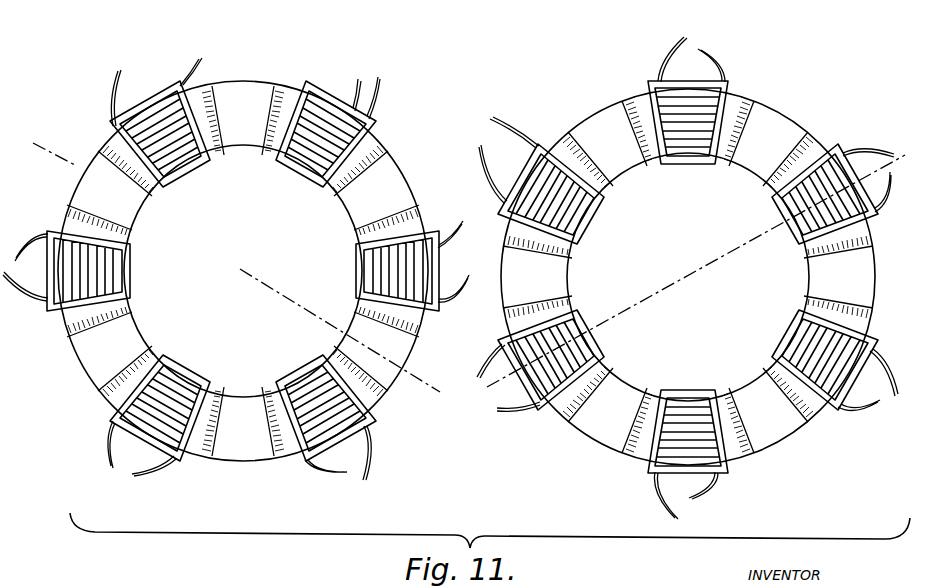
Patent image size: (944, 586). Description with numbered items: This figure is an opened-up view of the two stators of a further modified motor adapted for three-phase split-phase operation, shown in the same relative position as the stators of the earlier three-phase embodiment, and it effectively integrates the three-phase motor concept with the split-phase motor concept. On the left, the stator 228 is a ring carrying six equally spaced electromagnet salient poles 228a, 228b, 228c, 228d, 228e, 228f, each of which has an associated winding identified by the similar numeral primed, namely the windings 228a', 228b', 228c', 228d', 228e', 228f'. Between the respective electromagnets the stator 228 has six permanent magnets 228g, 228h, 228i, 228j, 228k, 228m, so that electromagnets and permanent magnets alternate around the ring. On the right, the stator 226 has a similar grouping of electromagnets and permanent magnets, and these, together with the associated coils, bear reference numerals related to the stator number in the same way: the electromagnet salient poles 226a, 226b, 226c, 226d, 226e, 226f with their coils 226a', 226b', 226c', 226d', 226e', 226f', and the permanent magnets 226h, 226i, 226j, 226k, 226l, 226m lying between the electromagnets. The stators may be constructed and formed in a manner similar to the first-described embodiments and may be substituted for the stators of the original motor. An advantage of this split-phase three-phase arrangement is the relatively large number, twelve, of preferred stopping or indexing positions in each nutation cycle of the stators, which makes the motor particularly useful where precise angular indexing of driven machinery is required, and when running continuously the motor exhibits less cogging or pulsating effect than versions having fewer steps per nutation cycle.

The stator 228 is at (283, 73).
The permanent magnet 228g is at (250, 83).
The permanent magnet 228h is at (392, 162).
The permanent magnet 228i is at (358, 327).
The permanent magnet 228j is at (262, 458).
The permanent magnet 228k is at (113, 417).
The permanent magnet 228m is at (93, 163).
The electromagnet salient pole 228a is at (138, 134).
The winding 228a' is at (174, 80).
The electromagnet salient pole 228b is at (358, 134).
The winding 228b' is at (401, 104).
The electromagnet salient pole 228c is at (368, 271).
The winding 228c' is at (456, 250).
The electromagnet salient pole 228d is at (311, 403).
The winding 228d' is at (372, 447).
The electromagnet salient pole 228e is at (166, 396).
The winding 228e' is at (153, 462).
The electromagnet salient pole 228f is at (115, 271).
The winding 228f' is at (100, 269).
The stator 226 is at (632, 92).
The permanent magnet 226h is at (633, 162).
The permanent magnet 226i is at (558, 262).
The permanent magnet 226j is at (593, 430).
The permanent magnet 226k is at (795, 432).
The permanent magnet 226l is at (825, 272).
The permanent magnet 226m is at (790, 128).
The electromagnet salient pole 226a is at (716, 98).
The winding 226a' is at (729, 61).
The electromagnet salient pole 226b is at (581, 194).
The winding 226b' is at (523, 150).
The electromagnet salient pole 226c is at (578, 360).
The winding 226c' is at (511, 397).
The electromagnet salient pole 226d is at (688, 416).
The winding 226d' is at (722, 495).
The electromagnet salient pole 226e is at (806, 360).
The winding 226e' is at (816, 361).
The electromagnet salient pole 226f is at (800, 194).
The winding 226f' is at (807, 197).